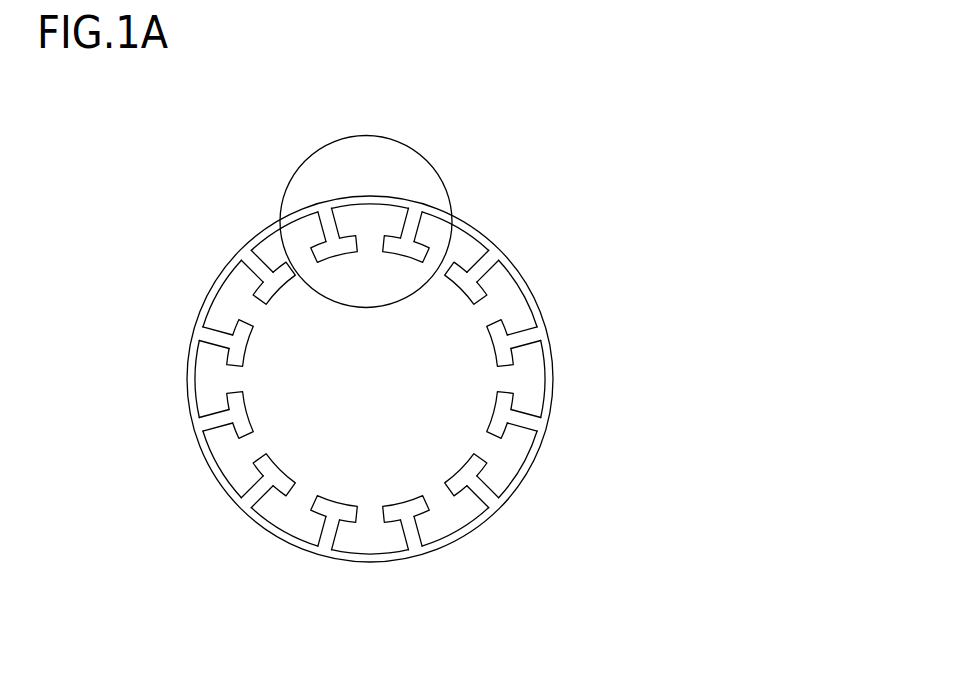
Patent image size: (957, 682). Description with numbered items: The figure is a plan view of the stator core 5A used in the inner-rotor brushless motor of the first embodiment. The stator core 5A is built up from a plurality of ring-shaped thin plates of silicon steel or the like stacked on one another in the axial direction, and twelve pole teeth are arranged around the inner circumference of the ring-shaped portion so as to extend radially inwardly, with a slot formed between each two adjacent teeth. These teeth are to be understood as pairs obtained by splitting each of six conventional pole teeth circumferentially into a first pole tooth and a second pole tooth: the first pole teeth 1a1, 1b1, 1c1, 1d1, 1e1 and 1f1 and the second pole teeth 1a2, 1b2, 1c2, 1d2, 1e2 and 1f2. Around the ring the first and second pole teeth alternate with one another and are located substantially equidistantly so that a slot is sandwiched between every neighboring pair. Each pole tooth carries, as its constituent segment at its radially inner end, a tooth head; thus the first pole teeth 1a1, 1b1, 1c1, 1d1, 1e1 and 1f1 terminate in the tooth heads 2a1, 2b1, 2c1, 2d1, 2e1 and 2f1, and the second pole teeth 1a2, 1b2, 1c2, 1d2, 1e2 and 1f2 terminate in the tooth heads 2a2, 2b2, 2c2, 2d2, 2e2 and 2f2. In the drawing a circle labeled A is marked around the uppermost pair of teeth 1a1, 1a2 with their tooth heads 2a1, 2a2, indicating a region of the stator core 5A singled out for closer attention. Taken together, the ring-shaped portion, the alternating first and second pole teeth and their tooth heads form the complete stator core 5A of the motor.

The stator core 5A is at (385, 368).
The enlarged region A is at (289, 155).
The first pole tooth 1a1 is at (323, 218).
The tooth head 2a1 is at (333, 238).
The second pole tooth 1a2 is at (407, 217).
The tooth head 2a2 is at (403, 237).
The first pole tooth 1b1 is at (477, 267).
The tooth head 2b1 is at (487, 278).
The second pole tooth 1b2 is at (525, 332).
The tooth head 2b2 is at (505, 323).
The first pole tooth 1c1 is at (525, 413).
The tooth head 2c1 is at (503, 423).
The second pole tooth 1c2 is at (487, 488).
The tooth head 2c2 is at (485, 470).
The first pole tooth 1d1 is at (417, 532).
The tooth head 2d1 is at (393, 522).
The second pole tooth 1d2 is at (332, 540).
The tooth head 2d2 is at (347, 522).
The first pole tooth 1e1 is at (258, 477).
The tooth head 2e1 is at (260, 470).
The second pole tooth 1e2 is at (217, 428).
The tooth head 2e2 is at (213, 440).
The first pole tooth 1f1 is at (213, 344).
The tooth head 2f1 is at (233, 333).
The second pole tooth 1f2 is at (255, 268).
The tooth head 2f2 is at (253, 292).